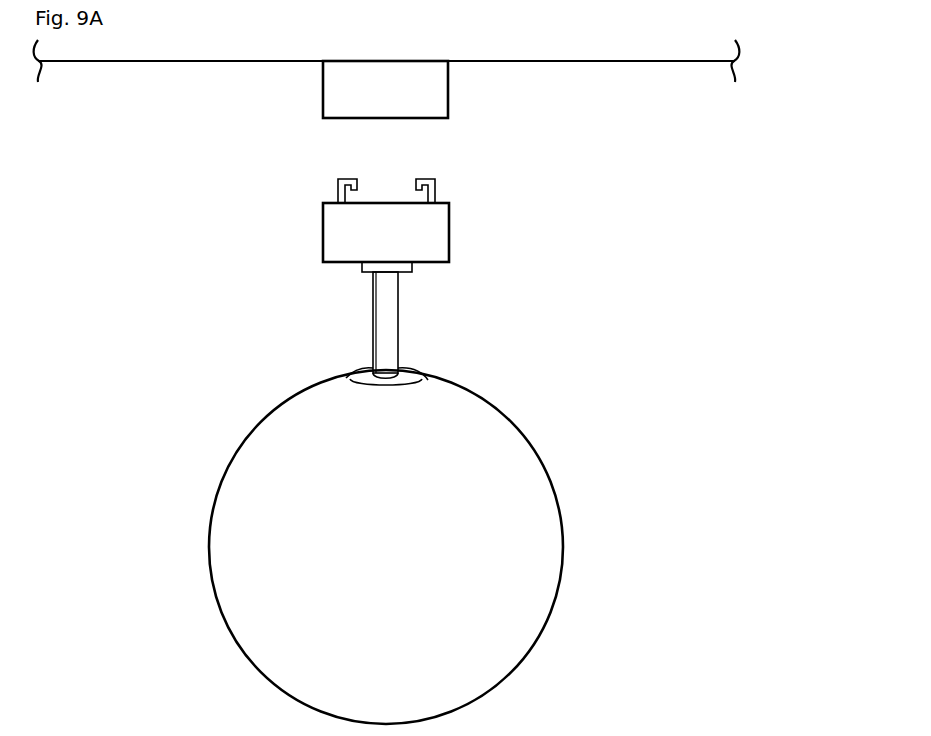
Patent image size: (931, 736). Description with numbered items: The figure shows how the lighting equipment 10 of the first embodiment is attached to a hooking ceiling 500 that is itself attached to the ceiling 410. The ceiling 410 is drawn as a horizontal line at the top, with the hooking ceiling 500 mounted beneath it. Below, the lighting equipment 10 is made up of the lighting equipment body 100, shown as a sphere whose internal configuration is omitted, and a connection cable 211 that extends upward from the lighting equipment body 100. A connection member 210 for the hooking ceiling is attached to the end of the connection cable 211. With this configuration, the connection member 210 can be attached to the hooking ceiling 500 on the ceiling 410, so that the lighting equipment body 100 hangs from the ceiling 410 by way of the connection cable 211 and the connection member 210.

The lighting equipment 10 is at (198, 403).
The lighting equipment body 100 is at (538, 430).
The connection member for the hooking ceiling 210 is at (449, 228).
The connection cable 211 is at (398, 324).
The ceiling 410 is at (178, 63).
The hooking ceiling 500 is at (448, 105).